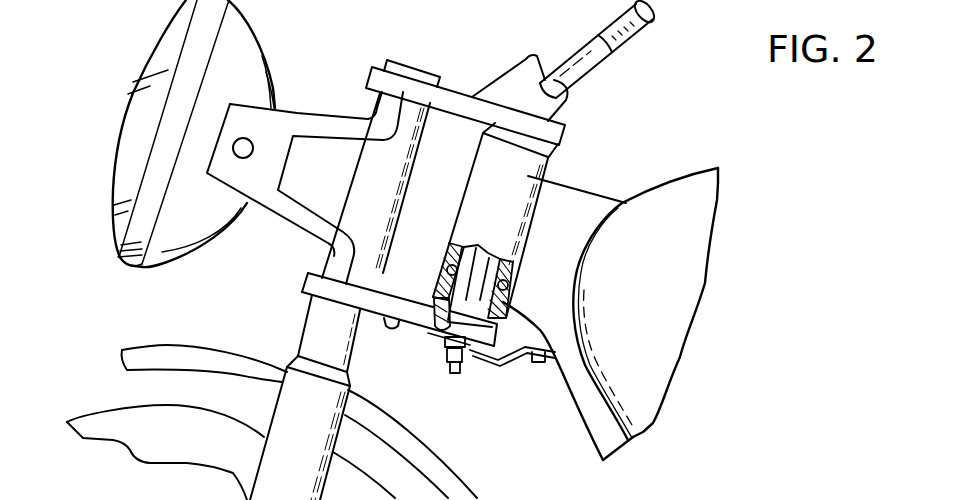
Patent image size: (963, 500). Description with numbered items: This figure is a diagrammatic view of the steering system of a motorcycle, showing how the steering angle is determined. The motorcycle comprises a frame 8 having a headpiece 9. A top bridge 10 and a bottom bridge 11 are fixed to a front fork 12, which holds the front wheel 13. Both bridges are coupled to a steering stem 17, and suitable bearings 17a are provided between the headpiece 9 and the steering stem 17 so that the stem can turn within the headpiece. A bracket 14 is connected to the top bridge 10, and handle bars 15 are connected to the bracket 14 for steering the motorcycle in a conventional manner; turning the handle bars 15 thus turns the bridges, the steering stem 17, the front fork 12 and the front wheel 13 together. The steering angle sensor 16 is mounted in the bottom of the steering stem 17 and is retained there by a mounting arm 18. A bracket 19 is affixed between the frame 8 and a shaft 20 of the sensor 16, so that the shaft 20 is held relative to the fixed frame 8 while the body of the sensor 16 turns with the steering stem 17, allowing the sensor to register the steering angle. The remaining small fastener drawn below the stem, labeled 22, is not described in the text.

The frame 8 is at (600, 438).
The headpiece 9 is at (527, 177).
The top bridge 10 is at (453, 91).
The bottom bridge 11 is at (388, 313).
The front fork 12 is at (320, 323).
The front wheel 13 is at (115, 422).
The bracket 14 is at (545, 58).
The handle bars 15 is at (585, 68).
The steering angle sensor 16 is at (472, 325).
The steering stem 17 is at (486, 262).
The bearings 17a is at (517, 288).
The mounting arm 18 is at (427, 318).
The bracket 19 is at (507, 364).
The shaft 20 is at (470, 334).
The bolt 22 is at (455, 374).